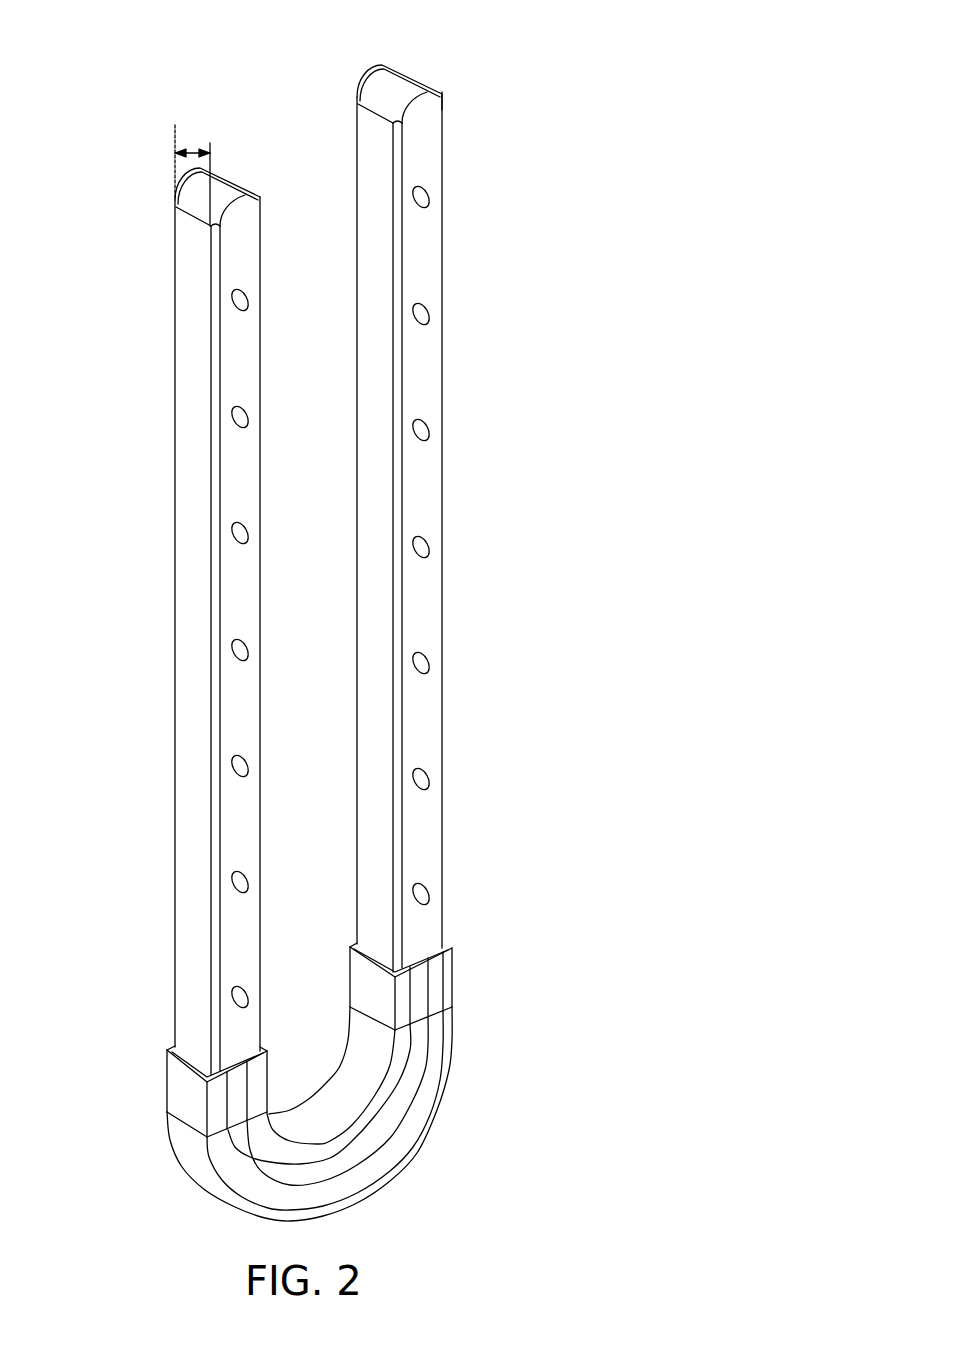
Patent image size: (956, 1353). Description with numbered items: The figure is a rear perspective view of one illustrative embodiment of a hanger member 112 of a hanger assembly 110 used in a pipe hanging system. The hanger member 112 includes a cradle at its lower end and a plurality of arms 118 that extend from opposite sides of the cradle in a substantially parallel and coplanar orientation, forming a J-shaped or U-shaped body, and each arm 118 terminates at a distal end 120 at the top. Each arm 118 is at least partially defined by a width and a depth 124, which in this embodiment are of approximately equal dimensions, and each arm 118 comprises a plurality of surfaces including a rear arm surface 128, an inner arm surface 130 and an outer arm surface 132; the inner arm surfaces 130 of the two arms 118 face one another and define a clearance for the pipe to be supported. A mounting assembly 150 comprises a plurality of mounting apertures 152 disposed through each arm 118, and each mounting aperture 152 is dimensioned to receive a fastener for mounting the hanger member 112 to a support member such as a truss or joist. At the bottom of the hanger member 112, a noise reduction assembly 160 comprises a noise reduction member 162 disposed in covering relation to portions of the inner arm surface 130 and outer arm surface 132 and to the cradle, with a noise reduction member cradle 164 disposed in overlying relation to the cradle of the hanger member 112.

The hanger assembly 110 is at (538, 60).
The hanger member 112 is at (445, 470).
The arm 118 is at (440, 706).
The distal end 120 is at (403, 68).
The depth 124 is at (191, 148).
The rear arm surface 128 is at (422, 135).
The inner arm surface 130 is at (380, 213).
The outer arm surface 132 is at (197, 318).
The mounting assembly 150 is at (462, 589).
The mounting aperture 152 is at (430, 305).
The noise reduction assembly 160 is at (417, 1172).
The noise reduction member 162 is at (432, 1085).
The noise reduction member cradle 164 is at (327, 1118).